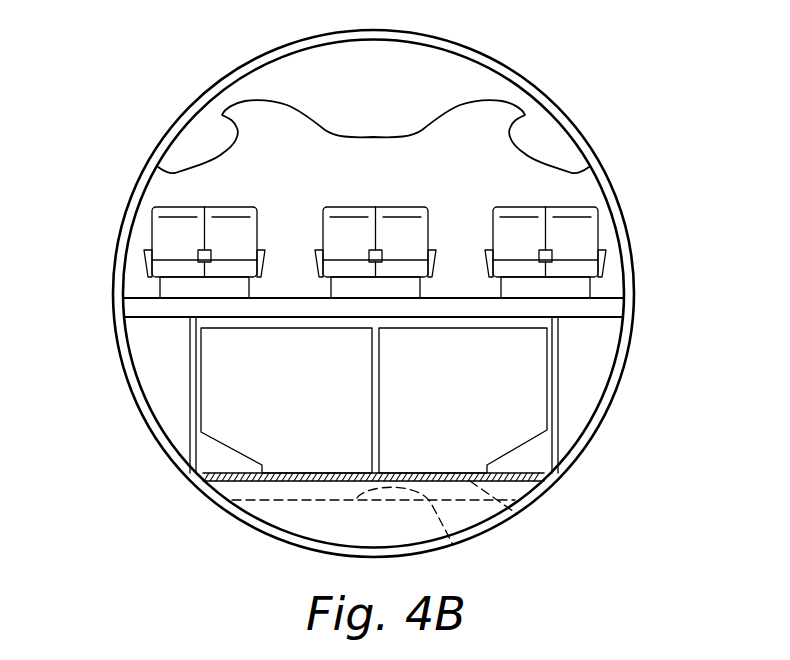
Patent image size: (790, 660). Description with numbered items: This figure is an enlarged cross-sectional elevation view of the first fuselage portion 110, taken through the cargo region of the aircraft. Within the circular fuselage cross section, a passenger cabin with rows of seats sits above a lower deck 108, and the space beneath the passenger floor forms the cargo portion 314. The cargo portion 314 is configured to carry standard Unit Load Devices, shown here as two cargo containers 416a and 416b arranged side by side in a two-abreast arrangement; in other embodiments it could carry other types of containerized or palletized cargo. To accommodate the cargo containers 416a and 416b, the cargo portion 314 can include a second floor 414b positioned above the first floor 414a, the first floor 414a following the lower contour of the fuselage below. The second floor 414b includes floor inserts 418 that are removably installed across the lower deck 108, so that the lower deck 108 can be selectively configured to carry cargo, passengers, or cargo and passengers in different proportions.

The first fuselage portion 110 is at (510, 70).
The lower deck 108 is at (298, 322).
The cargo portion 314 is at (443, 322).
The cargo container 416a is at (238, 396).
The cargo container 416b is at (518, 380).
The second floor 414b is at (522, 470).
The first floor 414a is at (453, 545).
The floor inserts 418 is at (515, 514).